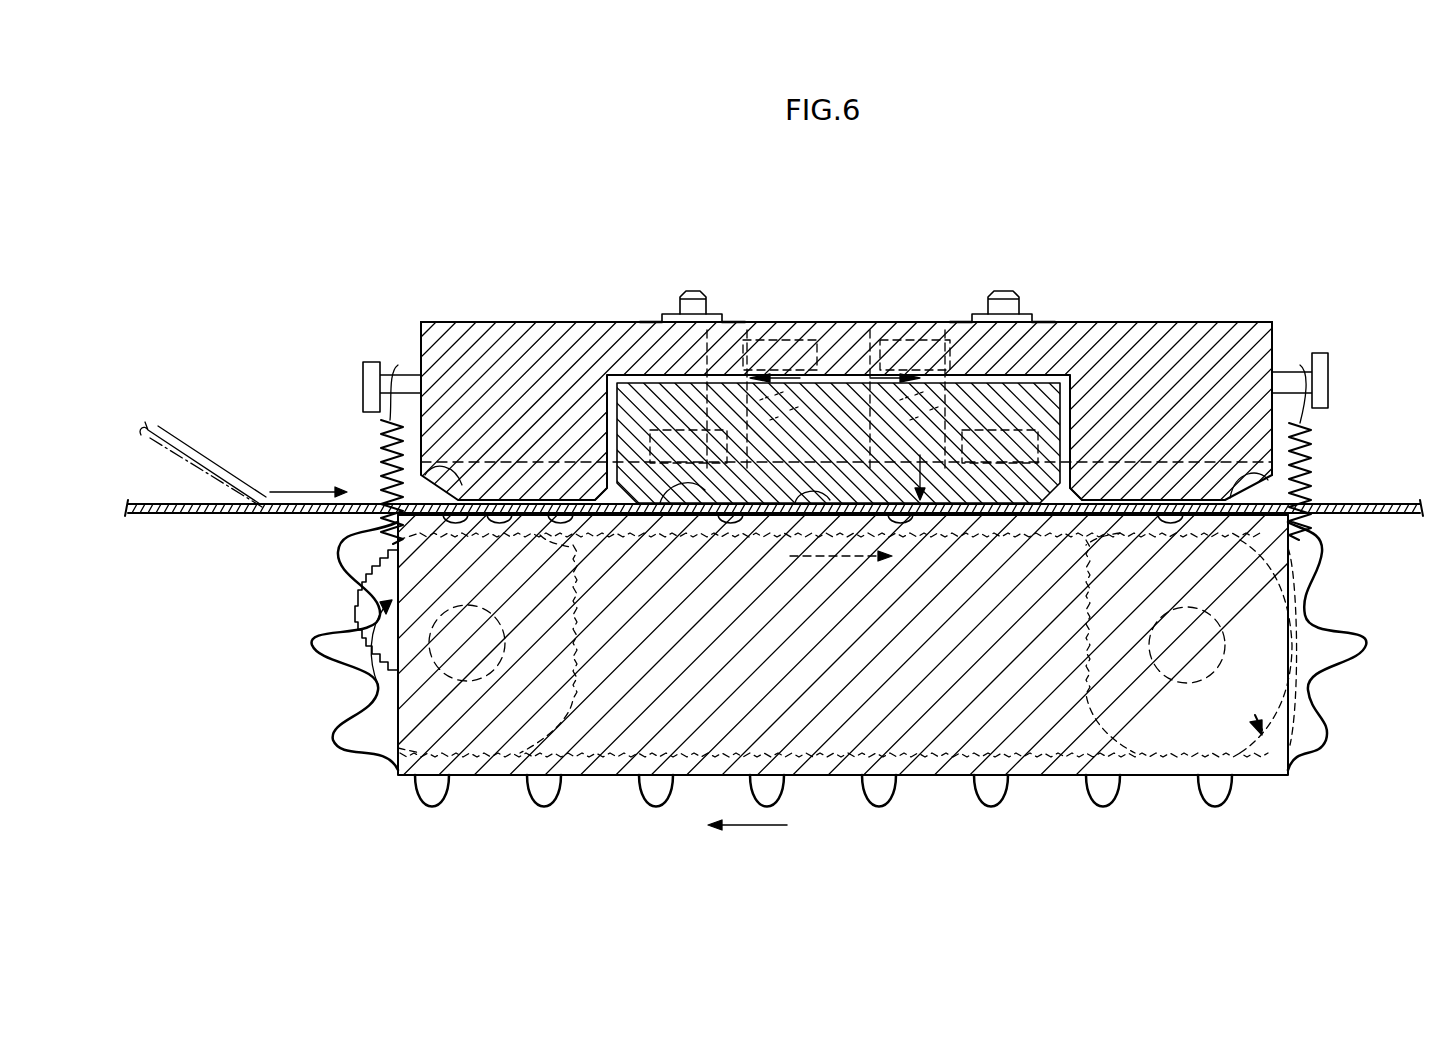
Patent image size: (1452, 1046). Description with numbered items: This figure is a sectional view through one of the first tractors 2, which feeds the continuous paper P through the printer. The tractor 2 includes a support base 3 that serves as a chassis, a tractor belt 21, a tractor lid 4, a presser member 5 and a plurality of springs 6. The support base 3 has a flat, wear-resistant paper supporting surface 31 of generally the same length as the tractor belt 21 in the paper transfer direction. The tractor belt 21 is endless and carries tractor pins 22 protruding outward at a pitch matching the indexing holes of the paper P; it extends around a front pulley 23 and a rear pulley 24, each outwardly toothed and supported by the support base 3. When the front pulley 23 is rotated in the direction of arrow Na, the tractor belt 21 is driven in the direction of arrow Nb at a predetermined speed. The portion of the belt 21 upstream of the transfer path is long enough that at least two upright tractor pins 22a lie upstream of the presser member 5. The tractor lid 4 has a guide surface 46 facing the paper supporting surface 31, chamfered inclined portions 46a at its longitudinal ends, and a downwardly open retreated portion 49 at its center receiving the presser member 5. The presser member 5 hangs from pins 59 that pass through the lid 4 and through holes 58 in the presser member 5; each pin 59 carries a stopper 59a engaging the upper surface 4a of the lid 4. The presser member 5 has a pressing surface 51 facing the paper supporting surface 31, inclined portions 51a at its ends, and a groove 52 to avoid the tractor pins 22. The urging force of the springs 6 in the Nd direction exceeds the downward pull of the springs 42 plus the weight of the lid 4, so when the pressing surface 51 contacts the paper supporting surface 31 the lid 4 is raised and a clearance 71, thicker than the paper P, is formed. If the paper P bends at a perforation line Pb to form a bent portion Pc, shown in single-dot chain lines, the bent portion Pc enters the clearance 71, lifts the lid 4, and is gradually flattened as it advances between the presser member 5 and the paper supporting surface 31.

The first tractor 2 is at (1194, 272).
The support base 3 is at (927, 738).
The tractor lid 4 is at (1145, 322).
The upper surface of tractor lid 4a is at (562, 322).
The presser member 5 is at (840, 383).
The spring 6 is at (790, 322).
The tractor belt 21 is at (1307, 680).
The tractor pin 22 is at (1003, 798).
The upright tractor pin 22a is at (455, 518).
The front pulley 23 is at (550, 677).
The rear pulley 24 is at (1103, 667).
The paper supporting surface 31 is at (722, 515).
The spring 42 is at (395, 470).
The guide surface 46 is at (496, 500).
The inclined portion 46a is at (412, 462).
The retreated portion 49 is at (880, 322).
The pressing surface 51 is at (812, 497).
The inclined portion 51a is at (607, 480).
The groove 52 is at (692, 495).
The through hole 58 is at (612, 322).
The pin 59 is at (675, 305).
The stopper 59a is at (718, 312).
The clearance 71 is at (495, 516).
The continuous paper P is at (195, 514).
The perforation line Pb is at (268, 514).
The bent portion Pc is at (210, 470).
The rotation direction arrow Na is at (345, 680).
The belt driving direction arrow Nb is at (747, 840).
The urging direction Nd is at (946, 478).